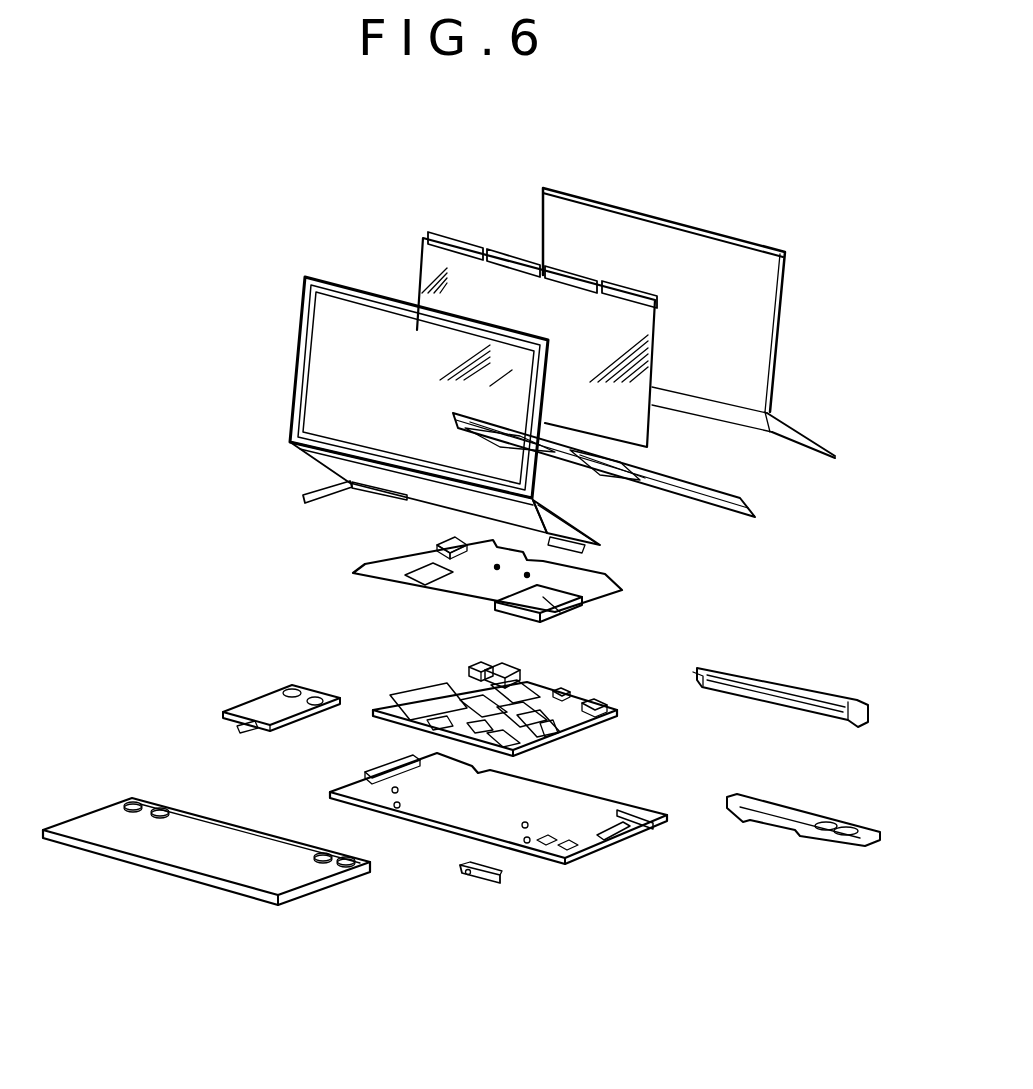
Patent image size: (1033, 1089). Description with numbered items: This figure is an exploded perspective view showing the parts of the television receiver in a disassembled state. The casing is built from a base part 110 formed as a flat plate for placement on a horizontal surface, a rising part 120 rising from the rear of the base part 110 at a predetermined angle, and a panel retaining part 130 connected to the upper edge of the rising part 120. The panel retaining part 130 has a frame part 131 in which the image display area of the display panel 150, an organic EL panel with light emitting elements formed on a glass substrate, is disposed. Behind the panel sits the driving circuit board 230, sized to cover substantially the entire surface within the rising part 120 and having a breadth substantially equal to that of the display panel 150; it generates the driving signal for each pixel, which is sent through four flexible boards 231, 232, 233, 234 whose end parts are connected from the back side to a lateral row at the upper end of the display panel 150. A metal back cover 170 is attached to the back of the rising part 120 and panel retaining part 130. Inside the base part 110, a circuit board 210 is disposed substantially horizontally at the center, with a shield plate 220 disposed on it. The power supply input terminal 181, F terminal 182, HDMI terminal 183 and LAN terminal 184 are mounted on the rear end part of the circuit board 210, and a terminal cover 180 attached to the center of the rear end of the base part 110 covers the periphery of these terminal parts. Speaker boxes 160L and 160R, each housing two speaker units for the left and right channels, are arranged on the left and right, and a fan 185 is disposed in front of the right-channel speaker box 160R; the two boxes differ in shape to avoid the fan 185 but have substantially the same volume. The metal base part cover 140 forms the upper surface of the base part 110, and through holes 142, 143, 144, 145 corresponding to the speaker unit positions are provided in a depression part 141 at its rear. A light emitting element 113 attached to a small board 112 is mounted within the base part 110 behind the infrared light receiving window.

The base part 110 is at (590, 850).
The small board 112 is at (502, 883).
The light emitting element 113 is at (467, 877).
The rising part 120 is at (570, 522).
The panel retaining part 130 is at (360, 405).
The frame part 131 is at (313, 407).
The base part cover 140 is at (236, 823).
The depression part 141 is at (245, 840).
The through hole 142 is at (147, 800).
The through hole 143 is at (177, 808).
The through hole 144 is at (319, 850).
The through hole 145 is at (352, 853).
The display panel 150 is at (618, 315).
The speaker box 160L is at (272, 710).
The speaker box 160R is at (813, 813).
The back cover 170 is at (787, 272).
The terminal cover 180 is at (803, 682).
The power supply input terminal 181 is at (483, 665).
The F terminal 182 is at (512, 672).
The HDMI terminal 183 is at (560, 692).
The LAN terminal 184 is at (600, 700).
The fan 185 is at (562, 605).
The circuit board 210 is at (528, 683).
The shield plate 220 is at (433, 553).
The driving circuit board 230 is at (634, 320).
The flexible board 231 is at (445, 232).
The flexible board 232 is at (503, 249).
The flexible board 233 is at (570, 268).
The flexible board 234 is at (630, 283).